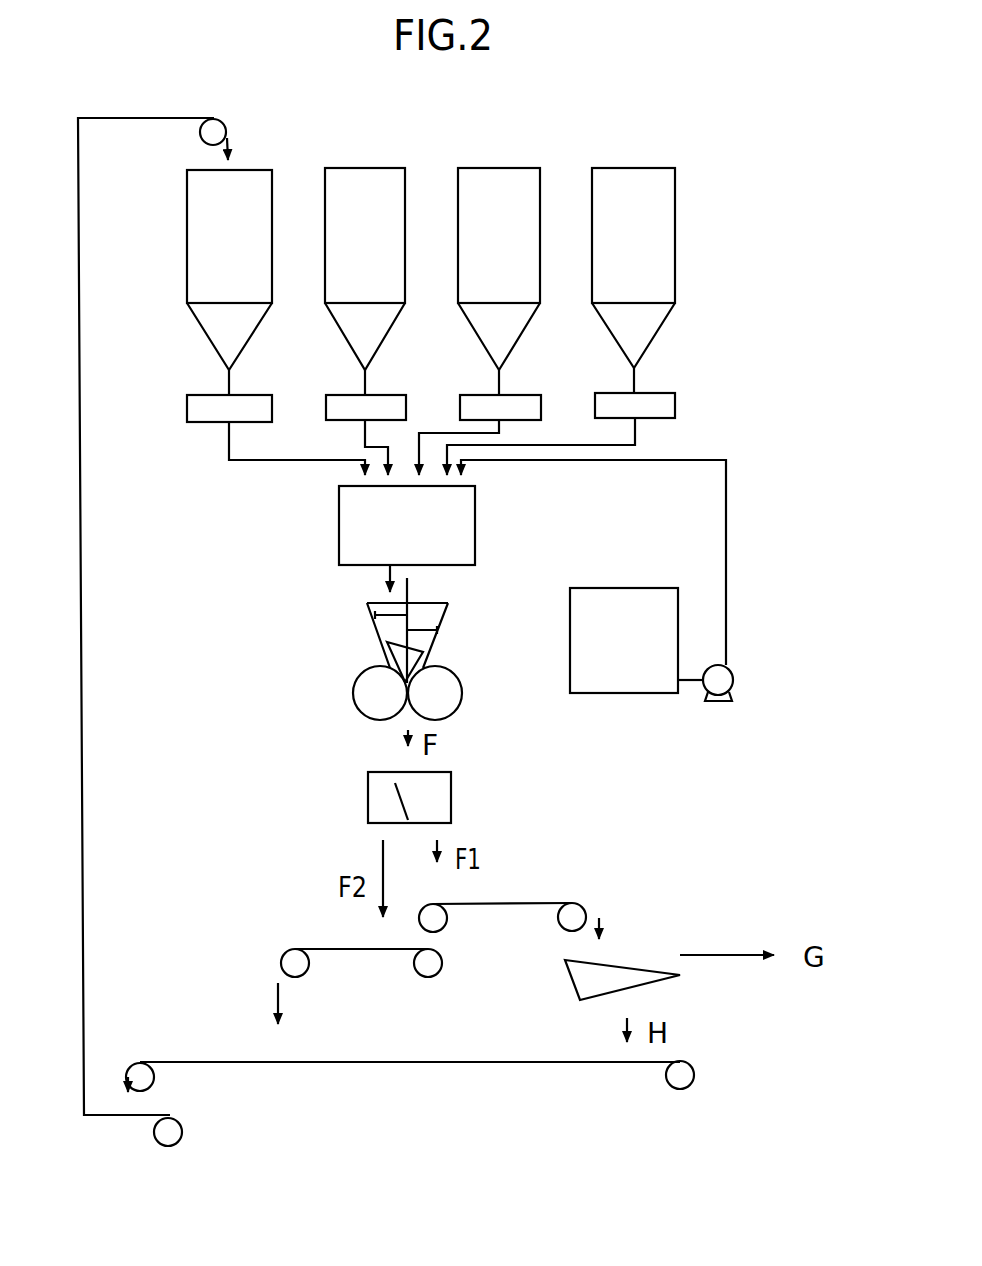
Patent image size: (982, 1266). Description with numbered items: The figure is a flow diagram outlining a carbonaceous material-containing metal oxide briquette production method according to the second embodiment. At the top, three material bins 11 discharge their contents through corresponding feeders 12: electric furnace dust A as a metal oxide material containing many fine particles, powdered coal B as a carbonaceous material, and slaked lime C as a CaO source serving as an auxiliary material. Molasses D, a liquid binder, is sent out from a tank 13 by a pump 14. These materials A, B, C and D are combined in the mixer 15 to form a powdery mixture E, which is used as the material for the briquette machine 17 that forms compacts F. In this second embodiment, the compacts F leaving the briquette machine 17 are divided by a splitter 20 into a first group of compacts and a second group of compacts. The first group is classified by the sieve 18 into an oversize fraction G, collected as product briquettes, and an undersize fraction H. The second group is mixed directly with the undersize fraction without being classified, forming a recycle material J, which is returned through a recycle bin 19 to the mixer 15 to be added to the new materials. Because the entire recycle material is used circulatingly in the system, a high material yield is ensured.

The material bins 11 is at (712, 259).
The feeders 12 is at (712, 411).
The tank 13 is at (626, 588).
The pump 14 is at (745, 677).
The mixer 15 is at (487, 525).
The briquette machine 17 is at (363, 641).
The sieve 18 is at (564, 975).
The recycle hopper J 19 is at (187, 238).
The splitter 20 is at (366, 792).